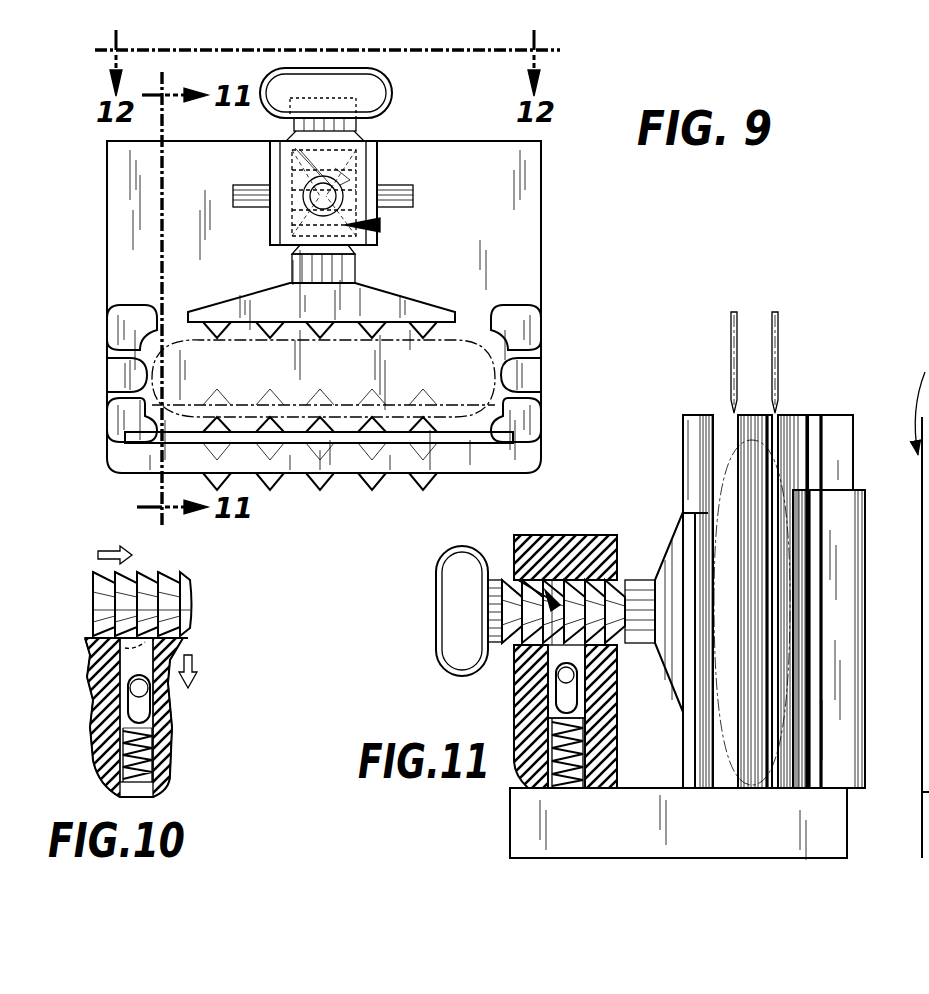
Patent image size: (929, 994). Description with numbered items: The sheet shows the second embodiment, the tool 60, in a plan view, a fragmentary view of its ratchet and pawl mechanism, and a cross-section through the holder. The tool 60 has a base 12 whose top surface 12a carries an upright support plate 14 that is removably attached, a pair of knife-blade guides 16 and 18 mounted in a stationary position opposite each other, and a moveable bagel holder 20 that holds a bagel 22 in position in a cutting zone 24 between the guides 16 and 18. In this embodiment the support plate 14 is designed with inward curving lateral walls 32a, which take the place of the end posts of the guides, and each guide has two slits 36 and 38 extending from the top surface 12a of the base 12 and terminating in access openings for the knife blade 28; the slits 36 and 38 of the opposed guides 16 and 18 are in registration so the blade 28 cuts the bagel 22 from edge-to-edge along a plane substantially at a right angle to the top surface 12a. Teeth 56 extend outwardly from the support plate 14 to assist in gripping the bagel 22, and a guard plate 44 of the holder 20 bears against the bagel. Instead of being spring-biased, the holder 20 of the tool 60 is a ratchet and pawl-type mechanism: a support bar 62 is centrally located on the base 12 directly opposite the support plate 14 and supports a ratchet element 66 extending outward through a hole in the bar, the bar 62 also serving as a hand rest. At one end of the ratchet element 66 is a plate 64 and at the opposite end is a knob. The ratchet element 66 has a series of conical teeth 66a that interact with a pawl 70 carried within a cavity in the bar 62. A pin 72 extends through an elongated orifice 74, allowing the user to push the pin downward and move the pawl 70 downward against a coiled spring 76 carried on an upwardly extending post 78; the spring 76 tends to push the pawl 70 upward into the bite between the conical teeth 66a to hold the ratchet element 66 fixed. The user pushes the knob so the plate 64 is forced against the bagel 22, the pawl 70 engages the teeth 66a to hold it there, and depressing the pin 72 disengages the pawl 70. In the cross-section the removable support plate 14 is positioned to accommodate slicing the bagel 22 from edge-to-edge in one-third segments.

In FIG. 9, the base 12 is at (117, 238).
In FIG. 9, the top surface of the base 12a is at (521, 231).
In FIG. 9, the support plate 14 is at (405, 462).
In FIG. 11, the support plate 14 is at (838, 413).
In FIG. 9, the knife-blade guide 16 is at (546, 378).
In FIG. 9, the knife-blade guide 18 is at (86, 366).
In FIG. 11, the knife-blade guide 18 is at (676, 395).
In FIG. 9, the bagel holder 20 is at (418, 282).
In FIG. 11, the bagel holder 20 is at (425, 632).
In FIG. 9, the bagel 22 is at (455, 338).
In FIG. 9, the cutting zone 24 is at (450, 385).
In FIG. 11, the knife blade 28 is at (735, 312).
In FIG. 9, the inward curving lateral walls 32a is at (105, 462).
In FIG. 9, the slit 36 is at (112, 396).
In FIG. 11, the slit 36 is at (783, 413).
In FIG. 9, the slit 38 is at (112, 352).
In FIG. 11, the slit 38 is at (734, 410).
In FIG. 9, the guard plate 44 is at (240, 305).
In FIG. 9, the teeth 56 is at (270, 402).
In FIG. 9, the tool 60 is at (556, 338).
In FIG. 11, the tool 60 is at (825, 383).
In FIG. 9, the support bar 62 is at (335, 195).
In FIG. 11, the support bar 62 is at (580, 535).
In FIG. 11, the plate 64 is at (675, 700).
In FIG. 9, the ratchet element 66 is at (382, 225).
In FIG. 11, the ratchet element 66 is at (518, 580).
In FIG. 9, the conical teeth 66a is at (300, 160).
In FIG. 10, the conical teeth 66a is at (155, 565).
In FIG. 11, the conical teeth 66a is at (618, 578).
In FIG. 10, the pawl 70 is at (148, 664).
In FIG. 11, the pawl 70 is at (565, 658).
In FIG. 9, the pin 72 is at (400, 192).
In FIG. 10, the pin 72 is at (132, 690).
In FIG. 11, the pin 72 is at (570, 672).
In FIG. 10, the elongated orifice 74 is at (162, 702).
In FIG. 11, the elongated orifice 74 is at (560, 700).
In FIG. 10, the coiled spring 76 is at (155, 785).
In FIG. 11, the coiled spring 76 is at (560, 790).
In FIG. 9, the upwardly extending post 78 is at (378, 170).